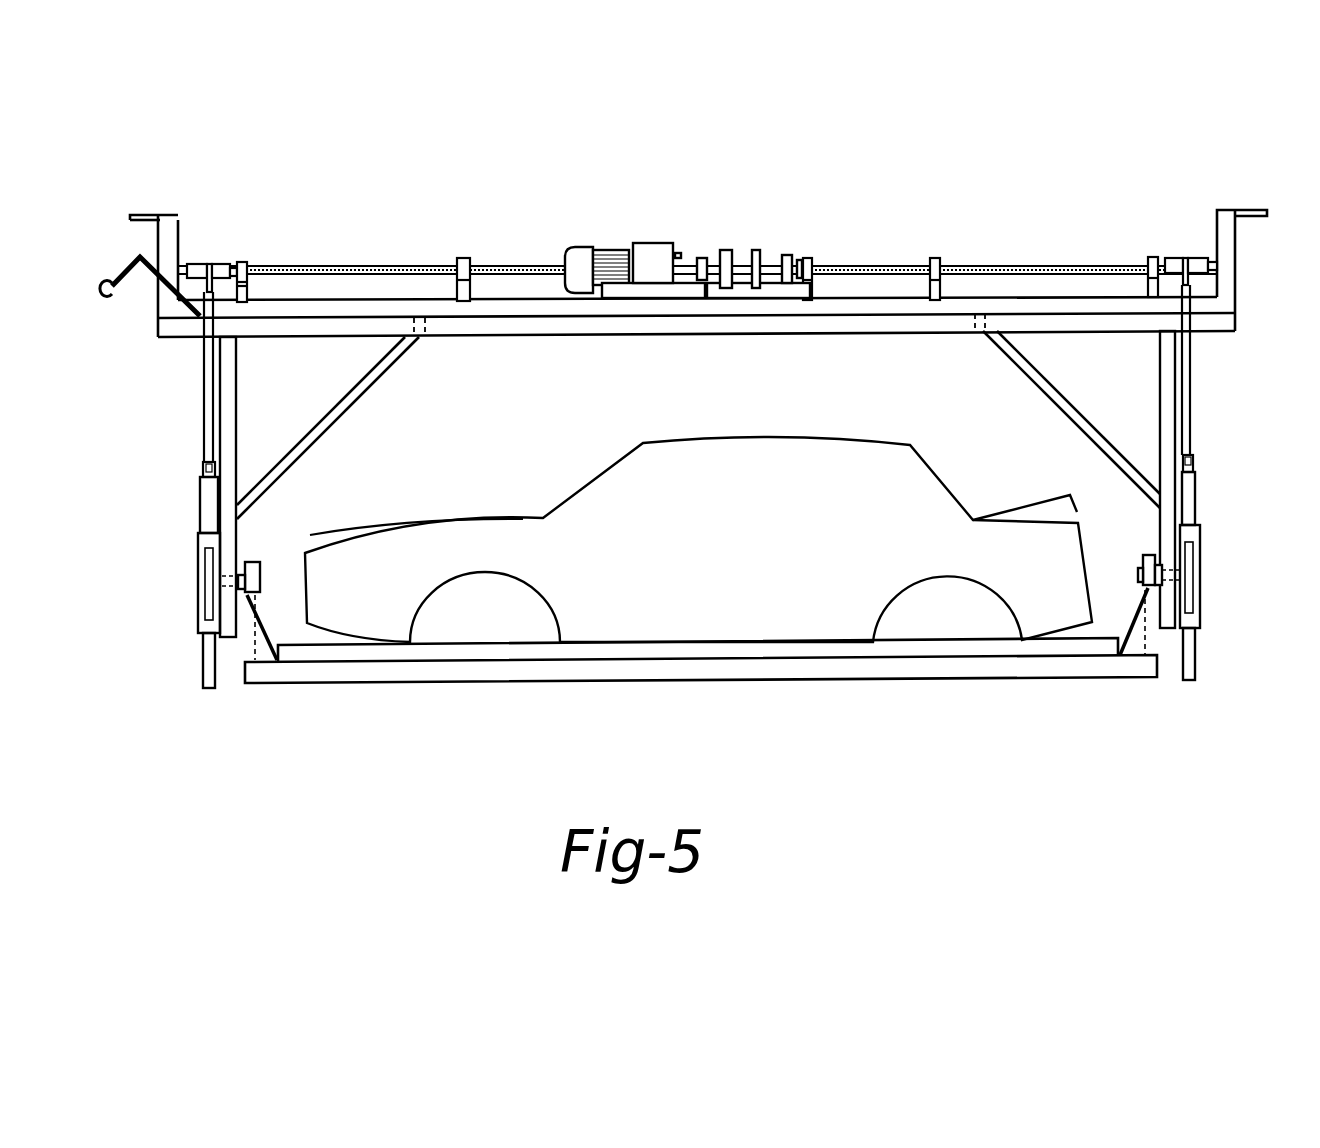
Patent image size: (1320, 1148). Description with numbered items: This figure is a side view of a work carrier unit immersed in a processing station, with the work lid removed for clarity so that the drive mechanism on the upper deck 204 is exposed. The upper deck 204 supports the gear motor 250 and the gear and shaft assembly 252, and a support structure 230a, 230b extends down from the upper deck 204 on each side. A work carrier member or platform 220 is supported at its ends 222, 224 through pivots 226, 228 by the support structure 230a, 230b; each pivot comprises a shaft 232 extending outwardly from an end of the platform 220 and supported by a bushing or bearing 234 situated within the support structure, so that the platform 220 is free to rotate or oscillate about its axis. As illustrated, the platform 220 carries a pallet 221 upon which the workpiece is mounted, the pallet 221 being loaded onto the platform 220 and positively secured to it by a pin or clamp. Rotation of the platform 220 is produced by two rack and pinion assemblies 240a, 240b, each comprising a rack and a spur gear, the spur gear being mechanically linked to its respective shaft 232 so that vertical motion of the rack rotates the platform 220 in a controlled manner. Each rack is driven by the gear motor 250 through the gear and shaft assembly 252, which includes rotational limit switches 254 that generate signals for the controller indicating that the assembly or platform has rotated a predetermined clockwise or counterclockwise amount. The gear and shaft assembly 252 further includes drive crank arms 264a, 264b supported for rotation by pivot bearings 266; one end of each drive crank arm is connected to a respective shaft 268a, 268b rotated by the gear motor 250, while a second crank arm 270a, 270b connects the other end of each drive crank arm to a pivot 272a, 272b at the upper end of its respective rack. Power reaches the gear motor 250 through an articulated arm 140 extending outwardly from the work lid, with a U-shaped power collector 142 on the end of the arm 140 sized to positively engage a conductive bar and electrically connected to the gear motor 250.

The articulated arm 140 is at (133, 268).
The power collector 142 is at (100, 290).
The upper deck 204 is at (300, 312).
The work carrier member or platform 220 is at (928, 663).
The pallet 221 is at (765, 652).
The end of platform 222 is at (252, 557).
The end of platform 224 is at (1147, 555).
The pivot 226 is at (258, 578).
The pivot 228 is at (1138, 575).
The support structure 230a is at (230, 637).
The support structure 230b is at (1172, 630).
The shaft 232 is at (228, 533).
The bushing or bearing 234 is at (225, 607).
The rack and pinion assembly 240a is at (188, 503).
The rack and pinion assembly 240b is at (1195, 500).
The gear motor 250 is at (607, 248).
The gear and shaft assembly 252 is at (533, 250).
The rotational limit switches 254 is at (676, 252).
The drive crank arm 264a is at (212, 264).
The drive crank arm 264b is at (1190, 258).
The pivot bearing 266 is at (252, 290).
The shaft 268a is at (380, 272).
The shaft 268b is at (862, 268).
The second crank arm 270a is at (204, 383).
The second crank arm 270b is at (1190, 385).
The pivot 272a is at (200, 465).
The pivot 272b is at (1193, 462).